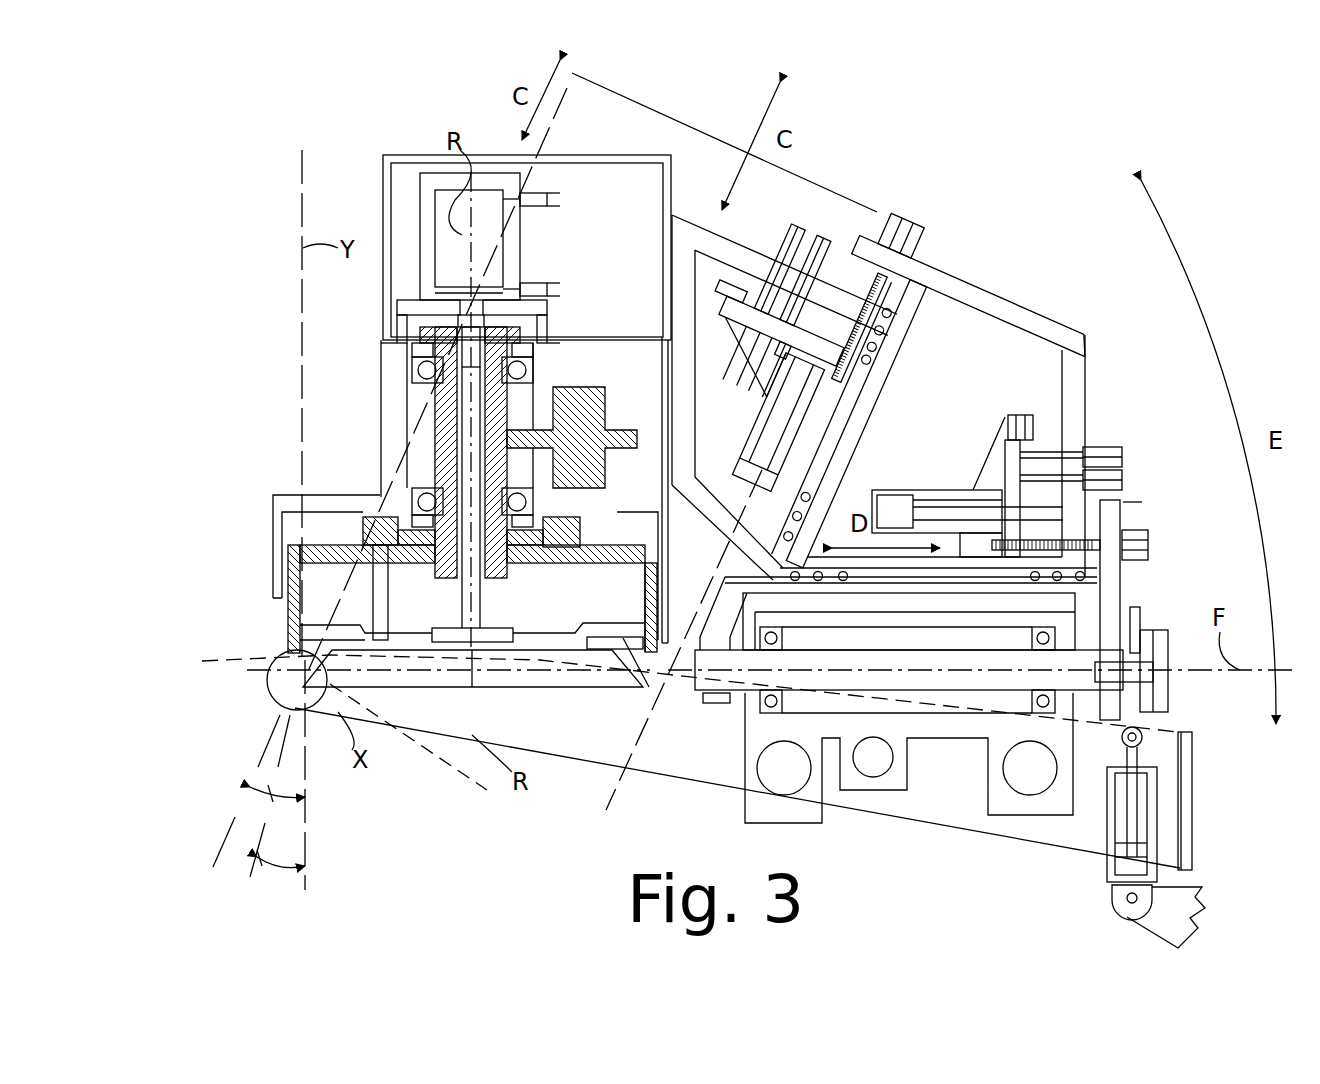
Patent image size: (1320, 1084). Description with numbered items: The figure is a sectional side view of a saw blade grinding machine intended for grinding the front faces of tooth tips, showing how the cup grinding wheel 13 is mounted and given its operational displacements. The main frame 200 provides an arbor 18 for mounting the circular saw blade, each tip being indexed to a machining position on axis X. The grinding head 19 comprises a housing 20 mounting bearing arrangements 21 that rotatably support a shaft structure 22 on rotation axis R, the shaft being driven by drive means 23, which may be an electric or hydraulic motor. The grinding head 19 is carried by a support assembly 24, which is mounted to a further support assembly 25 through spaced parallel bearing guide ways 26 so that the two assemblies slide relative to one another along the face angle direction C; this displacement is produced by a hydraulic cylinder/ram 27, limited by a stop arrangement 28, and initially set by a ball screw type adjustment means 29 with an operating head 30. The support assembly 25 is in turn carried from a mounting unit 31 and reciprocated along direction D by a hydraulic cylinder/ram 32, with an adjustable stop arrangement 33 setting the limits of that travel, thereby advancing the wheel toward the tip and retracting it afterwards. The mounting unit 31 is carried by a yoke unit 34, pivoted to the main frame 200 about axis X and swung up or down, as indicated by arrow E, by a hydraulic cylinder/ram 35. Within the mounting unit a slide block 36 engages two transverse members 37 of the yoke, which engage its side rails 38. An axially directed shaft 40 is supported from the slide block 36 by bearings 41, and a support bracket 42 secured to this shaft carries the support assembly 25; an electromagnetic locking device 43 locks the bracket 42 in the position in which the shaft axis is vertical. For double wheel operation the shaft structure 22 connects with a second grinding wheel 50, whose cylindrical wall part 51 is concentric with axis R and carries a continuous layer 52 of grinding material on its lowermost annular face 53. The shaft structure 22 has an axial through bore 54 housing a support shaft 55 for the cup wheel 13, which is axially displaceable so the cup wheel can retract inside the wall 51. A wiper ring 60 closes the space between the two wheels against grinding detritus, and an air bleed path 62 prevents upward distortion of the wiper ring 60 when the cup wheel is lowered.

The cup grinding wheel 13 is at (390, 638).
The arbor 18 is at (238, 922).
The grinding head 19 is at (383, 165).
The housing 20 is at (383, 295).
The bearing arrangements 21 is at (412, 372).
The shaft structure 22 is at (435, 412).
The drive means 23 is at (578, 387).
The support assembly 24 is at (789, 250).
The further support assembly 25 is at (983, 272).
The bearing guide ways 26 is at (855, 423).
The hydraulic cylinder/ram 27 is at (742, 402).
The stop arrangement 28 is at (773, 298).
The ball screw type adjustment means 29 is at (847, 267).
The operating head 30 is at (922, 213).
The mounting unit 31 is at (735, 722).
The hydraulic cylinder/ram 32 is at (925, 490).
The adjustable stop arrangement 33 is at (1012, 415).
The yoke unit 34 is at (1192, 815).
The hydraulic cylinder/ram 35 is at (1110, 890).
The slide block 36 is at (958, 745).
The transverse members 37 is at (787, 775).
The side rails 38 is at (576, 725).
The axially directed shaft 40 is at (798, 680).
The bearings 41 is at (1060, 635).
The support bracket 42 is at (718, 600).
The electromagnetic locking device 43 is at (1165, 690).
The second grinding wheel 50 is at (560, 568).
The cylindrical wall part 51 is at (645, 590).
The layer of grinding material 52 is at (633, 688).
The lowermost annular face 53 is at (270, 676).
The axial through bore 54 is at (490, 323).
The support shaft 55 is at (480, 410).
The wiper ring 60 is at (288, 610).
The air bleed path 62 is at (480, 625).
The main frame 200 is at (1172, 912).